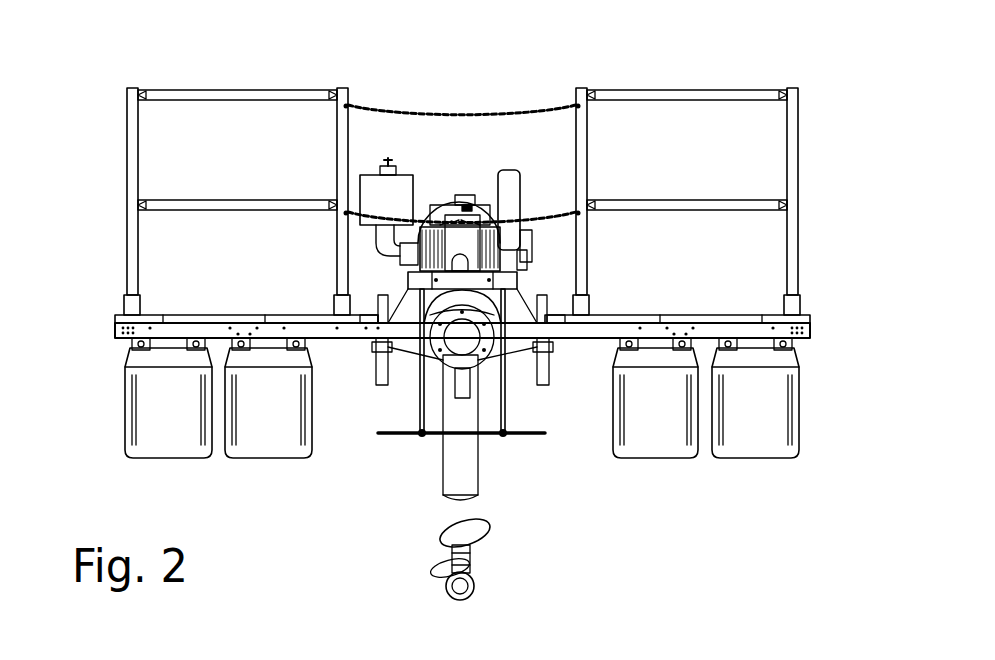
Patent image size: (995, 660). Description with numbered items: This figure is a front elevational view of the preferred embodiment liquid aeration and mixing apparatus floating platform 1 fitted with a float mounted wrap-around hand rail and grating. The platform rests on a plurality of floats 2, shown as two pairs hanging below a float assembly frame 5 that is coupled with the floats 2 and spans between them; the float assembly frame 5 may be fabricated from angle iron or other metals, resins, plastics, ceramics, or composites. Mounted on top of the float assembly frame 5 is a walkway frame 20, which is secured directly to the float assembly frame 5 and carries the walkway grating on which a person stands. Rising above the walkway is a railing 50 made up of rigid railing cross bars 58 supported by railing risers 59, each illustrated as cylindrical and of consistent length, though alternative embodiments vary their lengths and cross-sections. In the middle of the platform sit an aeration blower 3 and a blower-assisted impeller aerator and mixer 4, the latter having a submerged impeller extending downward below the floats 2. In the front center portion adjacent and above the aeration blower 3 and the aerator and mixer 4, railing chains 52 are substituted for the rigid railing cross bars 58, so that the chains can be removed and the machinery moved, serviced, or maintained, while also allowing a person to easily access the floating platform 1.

The liquid aeration and mixing apparatus floating platform 1 is at (122, 348).
The float 2 is at (255, 446).
The aeration blower 3 is at (509, 164).
The blower-assisted impeller aerator and mixer 4 is at (495, 540).
The float assembly frame 5 is at (112, 333).
The walkway frame 20 is at (112, 319).
The railing 50 is at (195, 181).
The railing chain 52 is at (412, 225).
The rigid railing cross bar 58 is at (220, 205).
The railing riser 59 is at (128, 263).